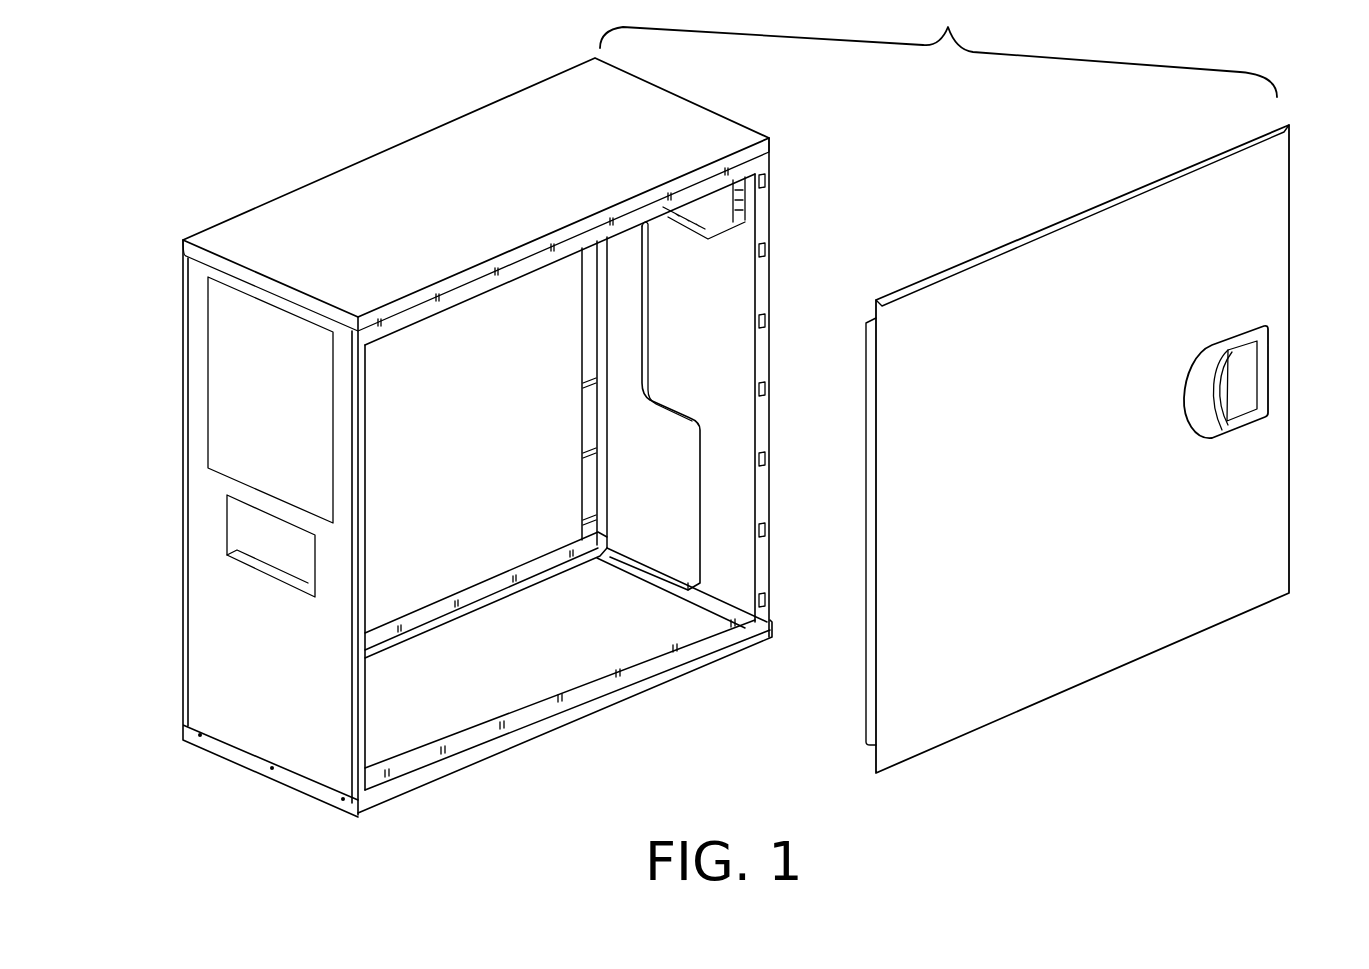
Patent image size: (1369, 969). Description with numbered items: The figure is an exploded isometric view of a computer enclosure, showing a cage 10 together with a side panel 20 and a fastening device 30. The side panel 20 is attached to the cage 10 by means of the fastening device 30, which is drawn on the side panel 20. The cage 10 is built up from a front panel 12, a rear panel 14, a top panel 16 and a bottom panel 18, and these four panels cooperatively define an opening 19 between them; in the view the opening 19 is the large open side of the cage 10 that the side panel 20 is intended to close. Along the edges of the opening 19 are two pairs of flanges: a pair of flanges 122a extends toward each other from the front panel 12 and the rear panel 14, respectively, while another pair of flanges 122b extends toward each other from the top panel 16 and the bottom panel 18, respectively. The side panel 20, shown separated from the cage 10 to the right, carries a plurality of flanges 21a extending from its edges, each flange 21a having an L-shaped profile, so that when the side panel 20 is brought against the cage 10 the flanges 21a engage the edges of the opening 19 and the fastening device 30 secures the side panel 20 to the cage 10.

The cage 10 is at (412, 120).
The front panel 12 is at (202, 363).
The rear panel 14 is at (730, 283).
The top panel 16 is at (350, 205).
The bottom panel 18 is at (570, 643).
The opening 19 is at (405, 528).
The side panel 20 is at (1070, 449).
The flanges 21a is at (1120, 195).
The fastening device 30 is at (1242, 380).
The flanges 122a is at (760, 210).
The flanges 122b is at (707, 175).